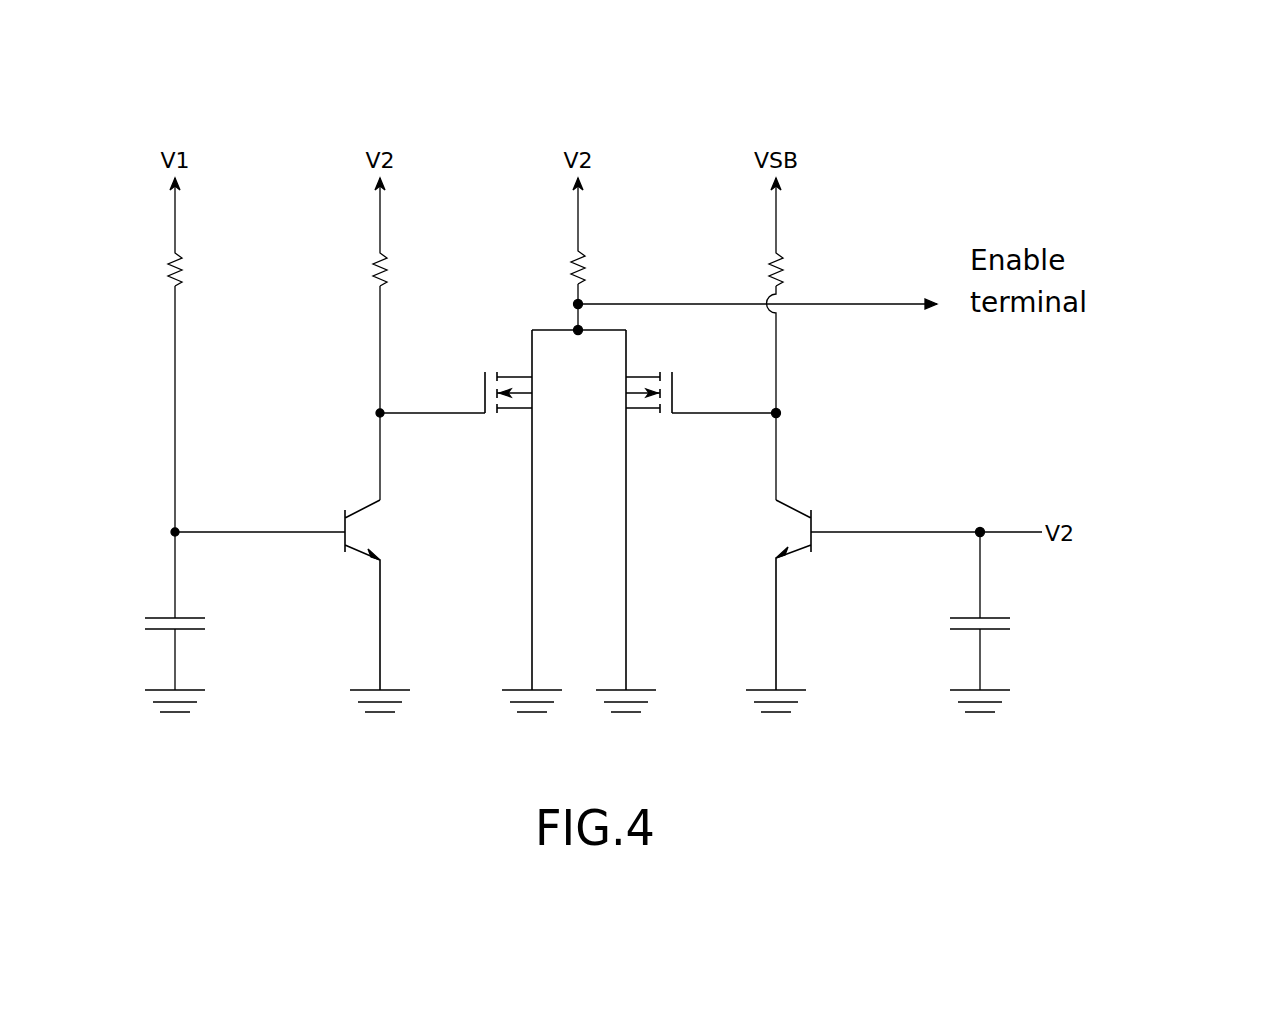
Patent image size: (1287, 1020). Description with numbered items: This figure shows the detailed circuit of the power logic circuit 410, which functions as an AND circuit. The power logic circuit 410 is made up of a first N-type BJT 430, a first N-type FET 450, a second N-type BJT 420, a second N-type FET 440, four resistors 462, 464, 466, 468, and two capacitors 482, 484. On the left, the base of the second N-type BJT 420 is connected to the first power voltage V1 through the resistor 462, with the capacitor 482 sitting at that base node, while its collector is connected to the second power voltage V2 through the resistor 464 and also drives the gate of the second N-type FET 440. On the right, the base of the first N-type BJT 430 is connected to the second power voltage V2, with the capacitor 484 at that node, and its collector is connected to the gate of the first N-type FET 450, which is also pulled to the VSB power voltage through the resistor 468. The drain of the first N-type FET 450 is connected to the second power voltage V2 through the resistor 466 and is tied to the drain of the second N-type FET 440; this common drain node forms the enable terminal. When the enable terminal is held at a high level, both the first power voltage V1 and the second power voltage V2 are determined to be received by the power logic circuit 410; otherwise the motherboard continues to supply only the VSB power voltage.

The power logic circuit 410 is at (1153, 145).
The second N-type BJT 420 is at (375, 548).
The first N-type BJT 430 is at (786, 548).
The second N-type FET 440 is at (512, 376).
The first N-type FET 450 is at (628, 376).
The resistor 462 is at (182, 272).
The resistor 464 is at (387, 272).
The resistor 466 is at (585, 272).
The resistor 468 is at (783, 272).
The capacitor 482 is at (205, 622).
The capacitor 484 is at (1010, 623).